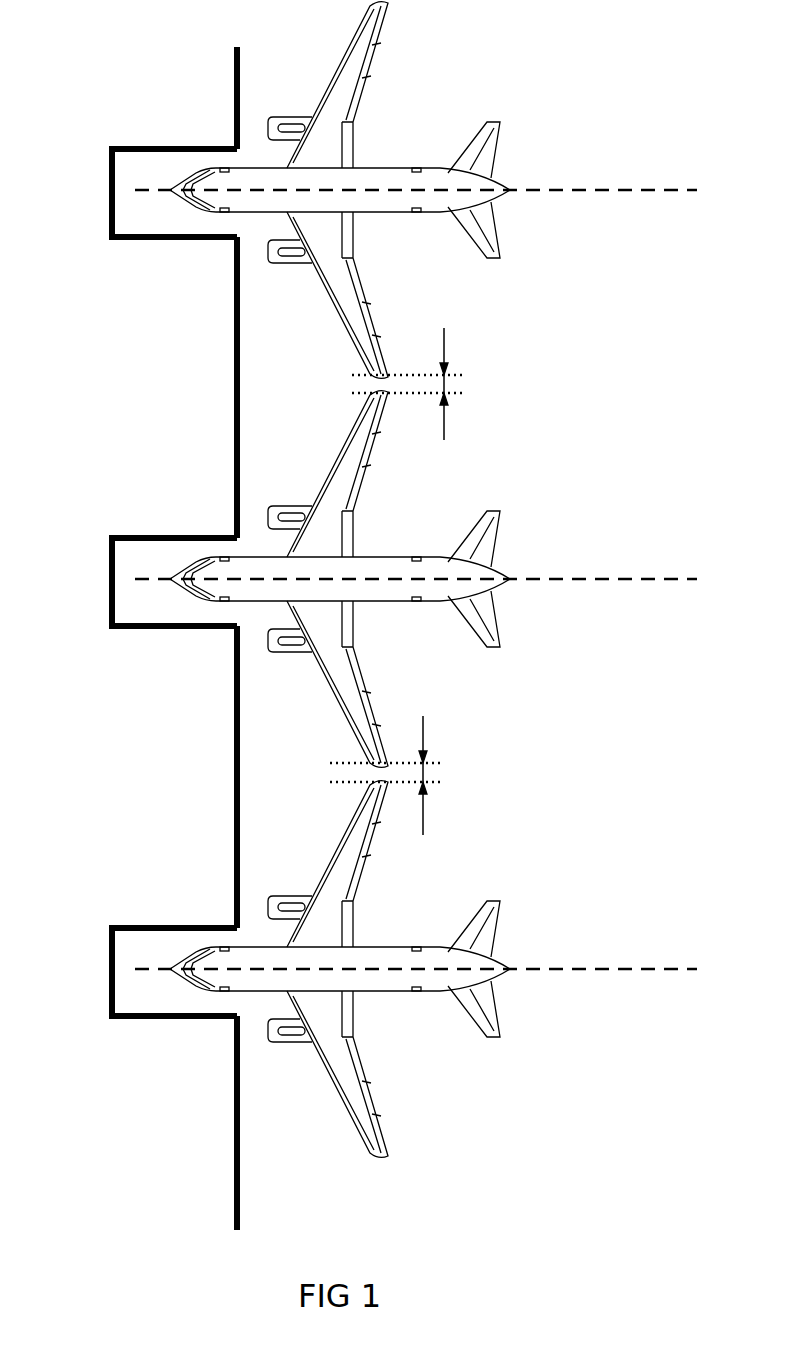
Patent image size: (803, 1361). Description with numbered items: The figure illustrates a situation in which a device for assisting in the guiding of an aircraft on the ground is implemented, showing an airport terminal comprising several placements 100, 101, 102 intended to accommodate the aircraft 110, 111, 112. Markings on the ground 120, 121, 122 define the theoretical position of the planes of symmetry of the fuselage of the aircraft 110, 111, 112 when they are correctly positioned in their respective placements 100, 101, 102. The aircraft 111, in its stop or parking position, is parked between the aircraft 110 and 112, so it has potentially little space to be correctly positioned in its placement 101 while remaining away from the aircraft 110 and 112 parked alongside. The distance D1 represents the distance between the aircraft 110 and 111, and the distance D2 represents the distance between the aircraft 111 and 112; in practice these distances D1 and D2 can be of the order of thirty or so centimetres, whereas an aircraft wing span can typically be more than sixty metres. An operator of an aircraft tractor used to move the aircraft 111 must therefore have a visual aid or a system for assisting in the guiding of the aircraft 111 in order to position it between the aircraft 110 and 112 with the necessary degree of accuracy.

The placement 100 is at (112, 147).
The placement 101 is at (110, 535).
The placement 102 is at (112, 927).
The aircraft 110 is at (498, 127).
The aircraft 111 is at (495, 519).
The aircraft 112 is at (490, 918).
The marking on the ground 120 is at (620, 190).
The marking on the ground 121 is at (620, 578).
The marking on the ground 122 is at (620, 968).
The distance D1 is at (455, 383).
The distance D2 is at (437, 766).